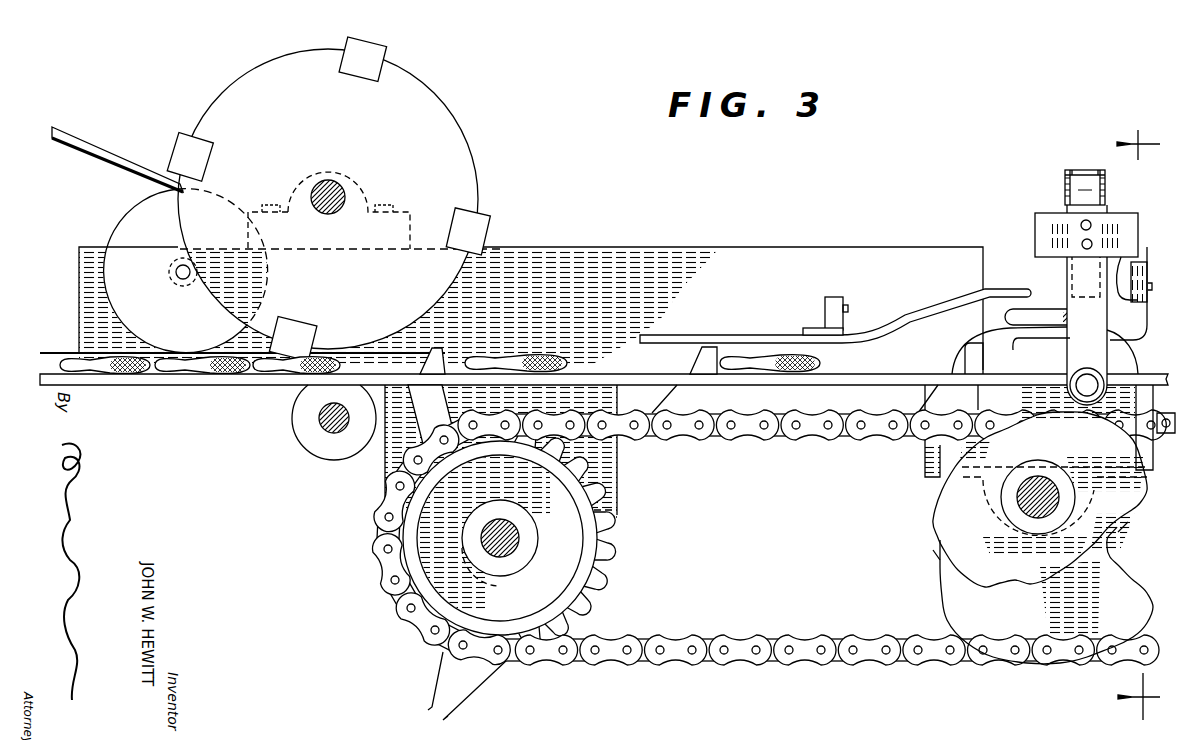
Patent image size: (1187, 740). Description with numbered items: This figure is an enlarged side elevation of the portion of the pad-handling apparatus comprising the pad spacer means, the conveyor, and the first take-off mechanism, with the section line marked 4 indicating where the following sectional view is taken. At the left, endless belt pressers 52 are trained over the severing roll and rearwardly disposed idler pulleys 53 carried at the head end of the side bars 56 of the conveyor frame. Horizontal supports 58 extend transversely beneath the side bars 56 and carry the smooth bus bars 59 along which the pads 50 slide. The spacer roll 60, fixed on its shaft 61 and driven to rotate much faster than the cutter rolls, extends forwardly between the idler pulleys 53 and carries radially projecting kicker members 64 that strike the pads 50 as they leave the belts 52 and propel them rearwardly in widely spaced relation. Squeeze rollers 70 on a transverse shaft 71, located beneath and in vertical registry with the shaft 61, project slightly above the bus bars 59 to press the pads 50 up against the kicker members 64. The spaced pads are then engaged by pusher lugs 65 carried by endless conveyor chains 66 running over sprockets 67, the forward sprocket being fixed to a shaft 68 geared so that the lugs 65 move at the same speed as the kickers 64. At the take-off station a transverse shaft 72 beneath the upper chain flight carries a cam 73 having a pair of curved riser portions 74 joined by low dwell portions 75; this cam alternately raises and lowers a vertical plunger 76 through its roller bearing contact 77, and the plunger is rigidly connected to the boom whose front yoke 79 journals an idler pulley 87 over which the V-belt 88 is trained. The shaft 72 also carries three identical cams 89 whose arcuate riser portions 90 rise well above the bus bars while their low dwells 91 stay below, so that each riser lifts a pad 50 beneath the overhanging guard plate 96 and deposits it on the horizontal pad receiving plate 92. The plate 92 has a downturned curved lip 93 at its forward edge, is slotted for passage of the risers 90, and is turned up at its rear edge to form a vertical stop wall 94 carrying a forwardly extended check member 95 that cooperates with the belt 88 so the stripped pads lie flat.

The section line 4- 4 is at (1138, 425).
The pads 50 is at (130, 353).
The endless belt pressers 52 is at (116, 160).
The idler pulleys 53 is at (128, 221).
The side bars 56 is at (665, 250).
The horizontal supports 58 is at (395, 445).
The bus bars 59 is at (185, 386).
The spacer roll 60 is at (462, 136).
The shaft 61 is at (344, 191).
The kicker members 64 is at (385, 58).
The pusher lugs 65 is at (455, 402).
The endless conveyor chains 66 is at (690, 643).
The sprockets 67 is at (430, 540).
The shaft 68 is at (516, 536).
The squeeze rollers 70 is at (297, 434).
The rotatable shaft 71 is at (330, 430).
The shaft 72 is at (1025, 503).
The cam 73 is at (1130, 500).
The curved riser portions 74 is at (1150, 440).
The low dwell portions 75 is at (976, 463).
The plunger 76 is at (1080, 345).
The roller bearing contact 77 is at (1104, 396).
The yoke 79 is at (1120, 213).
The idler pulley 87 is at (1066, 186).
The V-belt 88 is at (1083, 170).
The cams 89 is at (1105, 548).
The arcuate riser portions 90 is at (985, 318).
The low dwells 91 is at (1125, 527).
The pad receiving plate 92 is at (1136, 341).
The downturned curved lip 93 is at (1013, 345).
The vertical stop wall 94 is at (1146, 316).
The check member 95 is at (1118, 288).
The overhanging guard plate 96 is at (894, 313).